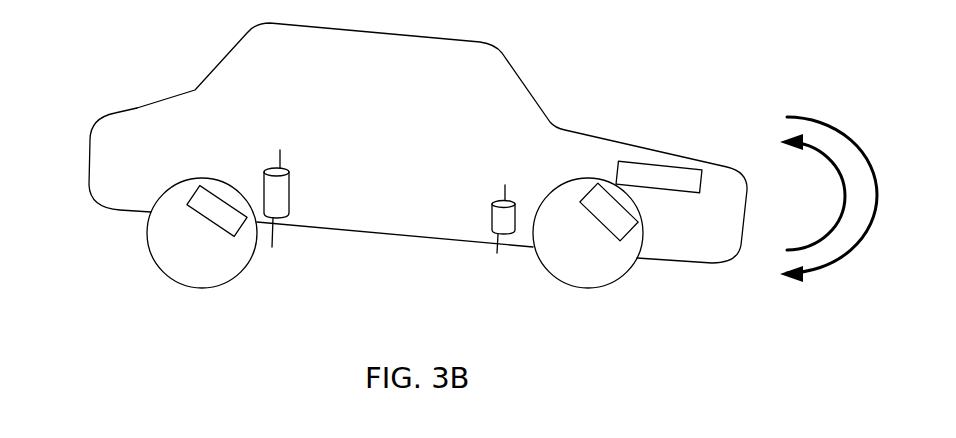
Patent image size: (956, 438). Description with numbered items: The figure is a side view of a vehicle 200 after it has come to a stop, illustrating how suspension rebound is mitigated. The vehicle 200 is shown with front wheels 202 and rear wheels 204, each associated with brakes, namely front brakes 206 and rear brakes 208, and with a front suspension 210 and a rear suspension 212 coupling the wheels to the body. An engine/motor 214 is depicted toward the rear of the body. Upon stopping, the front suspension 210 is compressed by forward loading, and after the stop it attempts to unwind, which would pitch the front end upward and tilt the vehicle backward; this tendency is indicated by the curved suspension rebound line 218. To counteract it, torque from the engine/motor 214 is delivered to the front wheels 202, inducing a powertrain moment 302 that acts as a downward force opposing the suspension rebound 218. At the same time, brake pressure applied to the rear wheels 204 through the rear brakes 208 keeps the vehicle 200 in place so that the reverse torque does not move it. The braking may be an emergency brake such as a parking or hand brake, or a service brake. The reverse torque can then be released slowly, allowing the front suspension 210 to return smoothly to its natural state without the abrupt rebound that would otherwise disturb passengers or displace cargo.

The vehicle 200 is at (137, 108).
The front wheels 202 is at (562, 282).
The rear wheels 204 is at (163, 257).
The front brakes 206 is at (628, 238).
The rear brakes 208 is at (203, 197).
The front suspension 210 is at (492, 212).
The rear suspension 212 is at (290, 193).
The engine/motor 214 is at (650, 163).
The suspension rebound 218 is at (812, 192).
The powertrain moment 302 is at (835, 198).